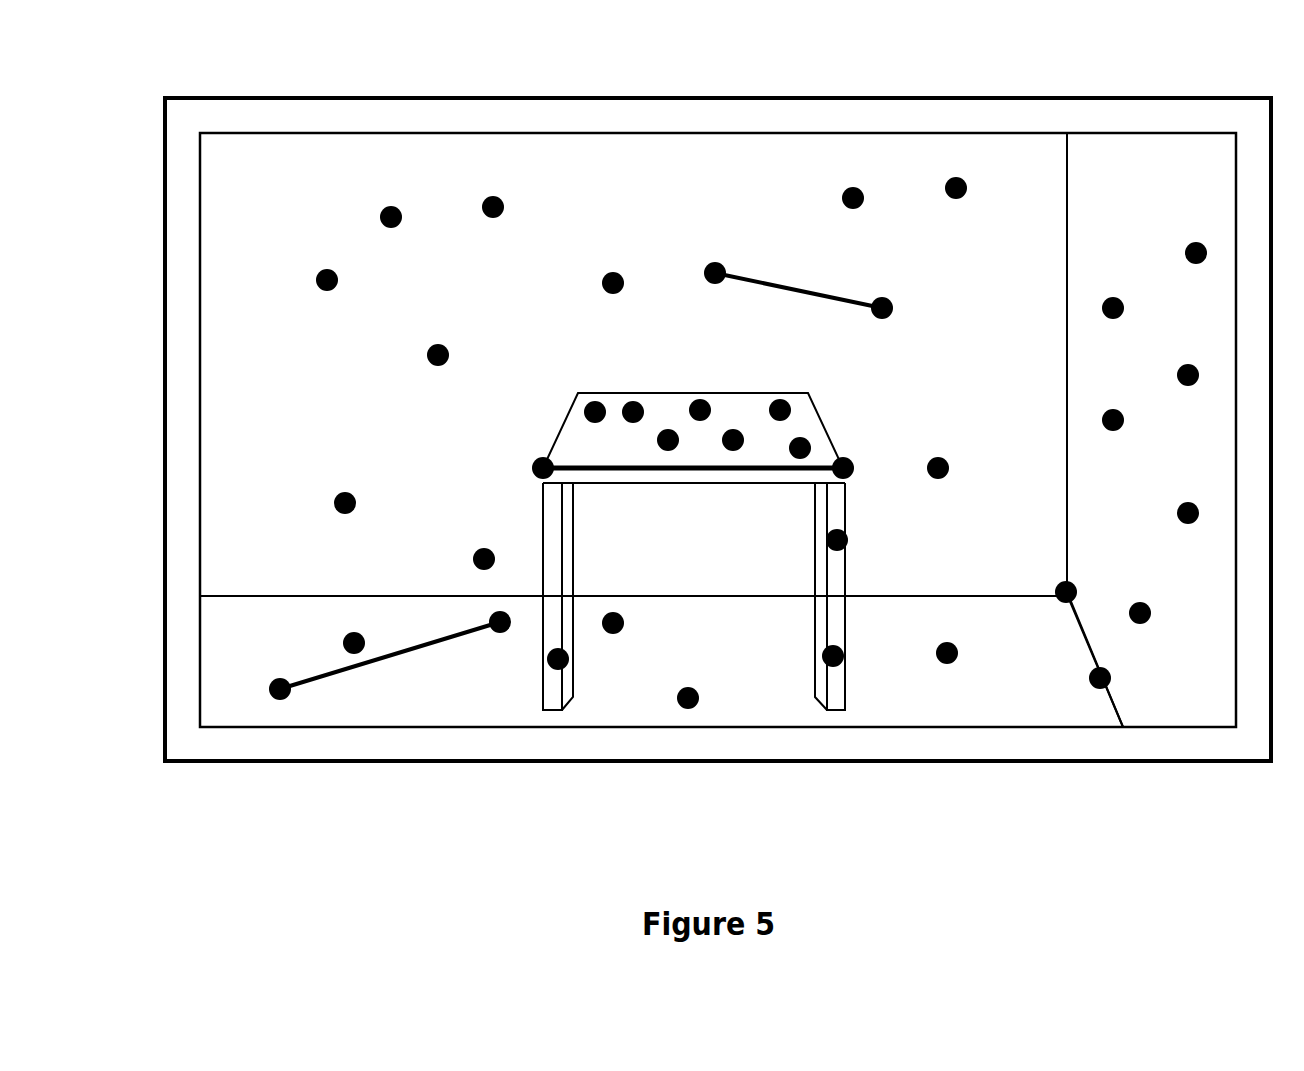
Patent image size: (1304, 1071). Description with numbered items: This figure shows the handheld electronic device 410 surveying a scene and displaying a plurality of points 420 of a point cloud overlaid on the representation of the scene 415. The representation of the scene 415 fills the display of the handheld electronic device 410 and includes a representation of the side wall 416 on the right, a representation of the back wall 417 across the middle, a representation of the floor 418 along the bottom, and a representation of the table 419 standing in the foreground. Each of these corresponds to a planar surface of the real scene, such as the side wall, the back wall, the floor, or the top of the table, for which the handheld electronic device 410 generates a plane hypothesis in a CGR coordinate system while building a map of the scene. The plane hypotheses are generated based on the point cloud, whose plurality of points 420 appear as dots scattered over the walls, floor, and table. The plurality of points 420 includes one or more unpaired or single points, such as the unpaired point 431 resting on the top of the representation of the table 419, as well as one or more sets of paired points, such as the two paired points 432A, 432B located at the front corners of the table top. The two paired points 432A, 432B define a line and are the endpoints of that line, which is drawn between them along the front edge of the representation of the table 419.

The handheld electronic device 410 is at (713, 96).
The representation of the scene 415 is at (782, 133).
The representation of the side wall 416 is at (1108, 430).
The representation of the back wall 417 is at (633, 364).
The representation of the floor 418 is at (661, 659).
The representation of the table 419 is at (678, 393).
The plurality of points 420 is at (272, 246).
The unpaired point 431 is at (780, 398).
The paired point 432A is at (540, 462).
The paired point 432B is at (848, 460).